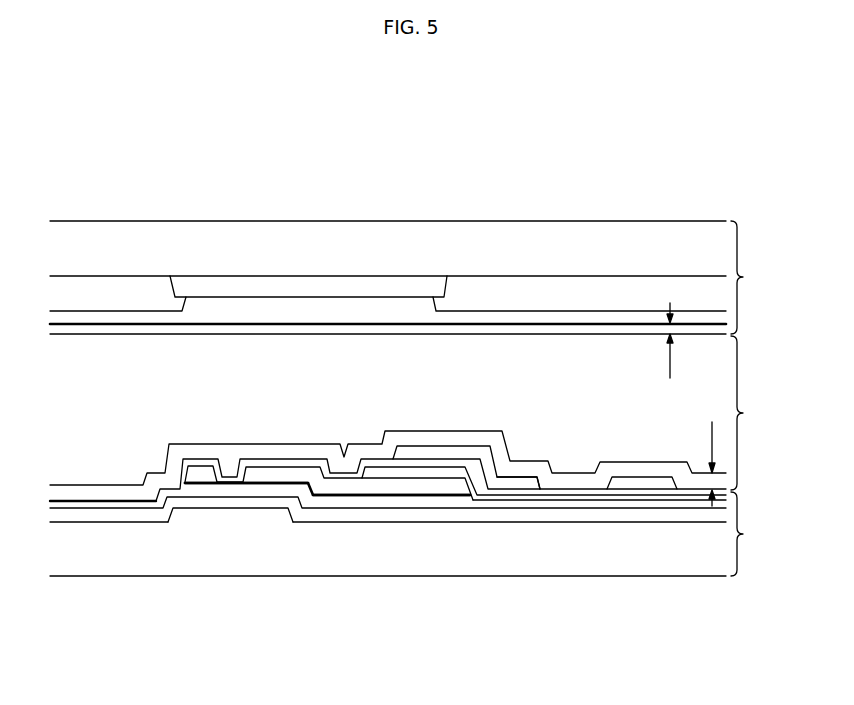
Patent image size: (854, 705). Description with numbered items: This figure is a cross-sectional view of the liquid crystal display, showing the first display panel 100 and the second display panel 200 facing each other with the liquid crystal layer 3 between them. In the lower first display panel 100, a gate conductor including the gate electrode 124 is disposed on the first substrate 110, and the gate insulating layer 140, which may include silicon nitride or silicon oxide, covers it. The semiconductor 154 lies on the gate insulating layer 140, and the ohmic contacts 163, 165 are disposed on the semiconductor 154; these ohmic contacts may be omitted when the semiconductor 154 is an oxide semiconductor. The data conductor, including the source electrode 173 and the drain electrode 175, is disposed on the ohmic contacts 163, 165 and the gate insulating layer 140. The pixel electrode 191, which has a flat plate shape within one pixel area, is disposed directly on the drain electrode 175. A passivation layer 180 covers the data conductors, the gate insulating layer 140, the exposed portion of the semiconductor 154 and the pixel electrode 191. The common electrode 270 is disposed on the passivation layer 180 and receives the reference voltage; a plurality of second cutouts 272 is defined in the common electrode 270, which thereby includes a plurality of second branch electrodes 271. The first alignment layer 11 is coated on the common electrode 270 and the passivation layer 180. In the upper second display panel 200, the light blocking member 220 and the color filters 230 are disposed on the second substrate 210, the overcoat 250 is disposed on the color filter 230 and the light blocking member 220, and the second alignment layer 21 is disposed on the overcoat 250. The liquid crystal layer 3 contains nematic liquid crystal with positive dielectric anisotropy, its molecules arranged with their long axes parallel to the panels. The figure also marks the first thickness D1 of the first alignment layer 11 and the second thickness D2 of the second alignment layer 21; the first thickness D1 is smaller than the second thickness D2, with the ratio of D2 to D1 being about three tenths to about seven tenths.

The second substrate 210 is at (660, 247).
The color filter 230 is at (122, 290).
The light blocking member 220 is at (263, 287).
The overcoat 250 is at (363, 308).
The second alignment layer 21 is at (583, 330).
The second display panel 200 is at (757, 277).
The second thickness D2 is at (685, 340).
The liquid crystal layer 3 is at (745, 413).
The first thickness D1 is at (698, 464).
The first display panel 100 is at (757, 534).
The first substrate 110 is at (692, 553).
The gate electrode 124 is at (262, 517).
The gate insulating layer 140 is at (313, 513).
The semiconductor 154 is at (370, 498).
The ohmic contact 163 is at (192, 482).
The ohmic contact 165 is at (408, 492).
The source electrode 173 is at (202, 473).
The drain electrode 175 is at (452, 485).
The pixel electrode 191 is at (515, 503).
The passivation layer 180 is at (569, 490).
The common electrode 270 is at (502, 482).
The second cutout 272 is at (540, 483).
The second branch electrode 271 is at (640, 482).
The first alignment layer 11 is at (635, 470).